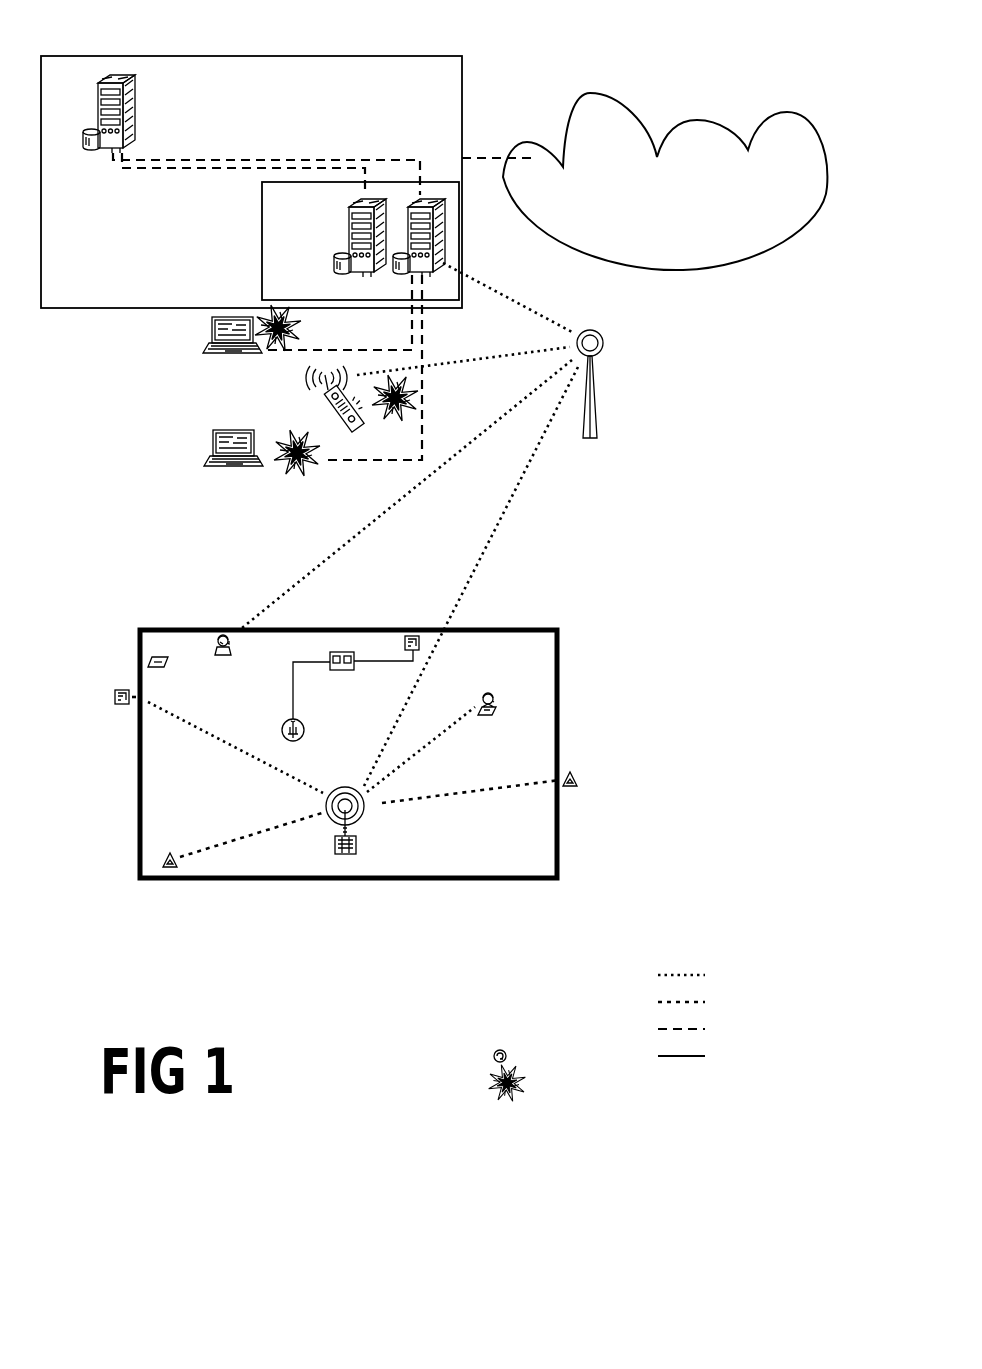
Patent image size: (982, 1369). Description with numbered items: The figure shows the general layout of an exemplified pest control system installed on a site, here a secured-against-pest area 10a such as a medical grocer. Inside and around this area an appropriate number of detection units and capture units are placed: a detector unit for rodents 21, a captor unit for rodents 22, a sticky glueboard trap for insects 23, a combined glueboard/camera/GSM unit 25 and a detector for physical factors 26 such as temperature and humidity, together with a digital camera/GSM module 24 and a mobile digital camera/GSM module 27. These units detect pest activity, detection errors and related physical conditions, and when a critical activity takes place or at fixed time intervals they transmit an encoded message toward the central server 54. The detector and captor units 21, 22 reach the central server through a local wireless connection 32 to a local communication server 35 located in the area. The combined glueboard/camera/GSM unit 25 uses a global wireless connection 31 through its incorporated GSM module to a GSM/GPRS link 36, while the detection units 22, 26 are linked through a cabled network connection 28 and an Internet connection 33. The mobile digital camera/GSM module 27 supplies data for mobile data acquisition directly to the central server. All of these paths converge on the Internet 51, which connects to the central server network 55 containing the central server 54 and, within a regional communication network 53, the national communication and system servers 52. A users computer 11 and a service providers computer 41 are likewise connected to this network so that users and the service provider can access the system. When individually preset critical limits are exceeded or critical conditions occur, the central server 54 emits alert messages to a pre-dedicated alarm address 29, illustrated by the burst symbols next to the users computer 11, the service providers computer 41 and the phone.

The secured against pest area (medical grocer) 10a is at (138, 808).
The users computer 11 is at (204, 460).
The detector unit for rodents 21 is at (582, 767).
The captor unit for rodents 22 is at (402, 630).
The sticky glueboard trap for insects 23 is at (167, 665).
The digital camera/GSM module 24 is at (482, 1057).
The combined glueboard/camera/GSM unit 25 is at (500, 710).
The detector for physical factors 26 is at (285, 723).
The mobile digital camera/GSM module 27 is at (230, 653).
The cabled network connection 28 is at (350, 670).
The alarm address 29 is at (491, 1083).
The global wireless connection 31 is at (662, 976).
The local wireless connection 32 is at (662, 1003).
The internet connection 33 is at (662, 1043).
The local communication server 35 is at (358, 849).
The GSM/GPRS link 36 is at (595, 400).
The service providers computer 41 is at (203, 345).
The internet 51 is at (718, 150).
The national communication and system server 52 is at (349, 220).
The regional communication network 53 is at (262, 252).
The central server 54 is at (135, 88).
The central server network 55 is at (462, 95).